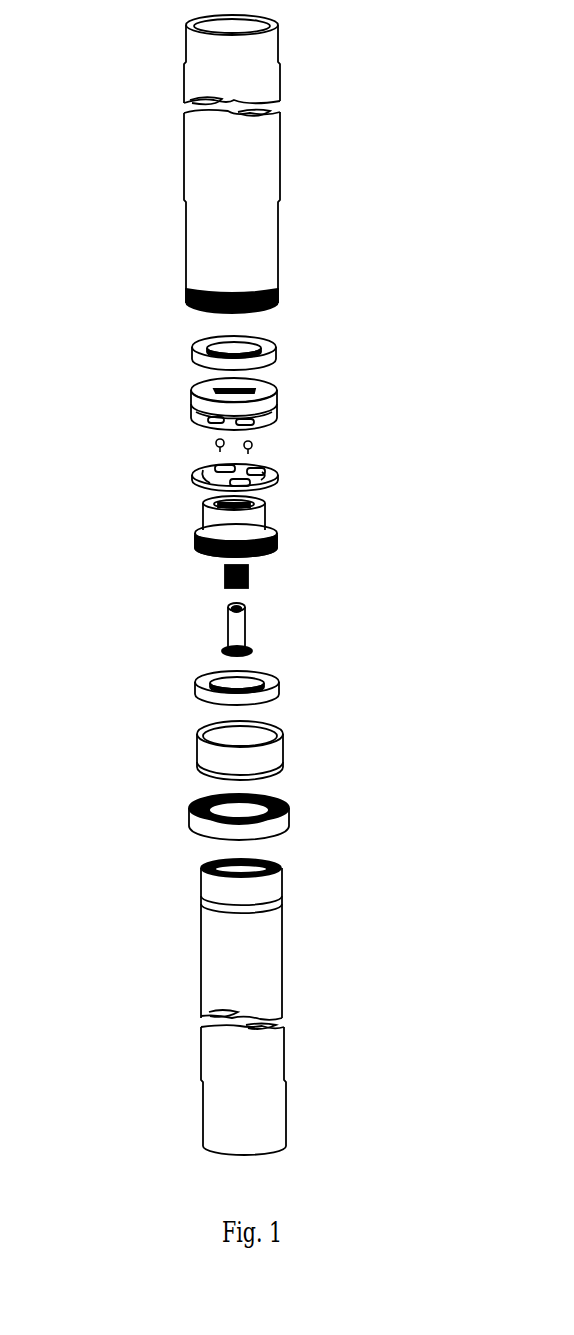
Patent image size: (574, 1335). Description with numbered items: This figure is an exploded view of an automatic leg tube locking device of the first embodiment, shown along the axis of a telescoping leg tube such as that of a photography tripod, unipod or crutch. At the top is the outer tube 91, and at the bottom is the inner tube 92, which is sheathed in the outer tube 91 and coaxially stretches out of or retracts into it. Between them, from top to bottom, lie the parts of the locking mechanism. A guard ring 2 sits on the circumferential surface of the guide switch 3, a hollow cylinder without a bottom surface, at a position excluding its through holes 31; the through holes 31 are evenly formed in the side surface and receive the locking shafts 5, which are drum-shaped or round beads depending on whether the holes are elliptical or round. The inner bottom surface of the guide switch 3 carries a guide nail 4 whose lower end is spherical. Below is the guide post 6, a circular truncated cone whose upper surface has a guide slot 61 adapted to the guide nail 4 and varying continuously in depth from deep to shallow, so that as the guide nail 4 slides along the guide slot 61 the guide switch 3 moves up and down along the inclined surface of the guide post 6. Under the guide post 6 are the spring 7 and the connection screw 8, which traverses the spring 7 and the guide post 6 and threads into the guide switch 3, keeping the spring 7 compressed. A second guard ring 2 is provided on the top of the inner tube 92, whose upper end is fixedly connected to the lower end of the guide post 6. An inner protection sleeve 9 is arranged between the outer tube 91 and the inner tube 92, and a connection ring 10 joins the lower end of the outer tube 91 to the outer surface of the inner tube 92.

The outer tube 91 is at (278, 230).
The guard ring 2 is at (280, 352).
The guide switch 3 is at (227, 399).
The through holes 31 is at (192, 412).
The guide nail 4 is at (252, 446).
The locking shafts 5 is at (280, 478).
The guide post 6 is at (226, 509).
The guide slot 61 is at (212, 507).
The spring 7 is at (250, 577).
The connection screw 8 is at (246, 631).
The inner protection sleeve 9 is at (286, 748).
The connection ring 10 is at (292, 823).
The inner tube 92 is at (284, 891).